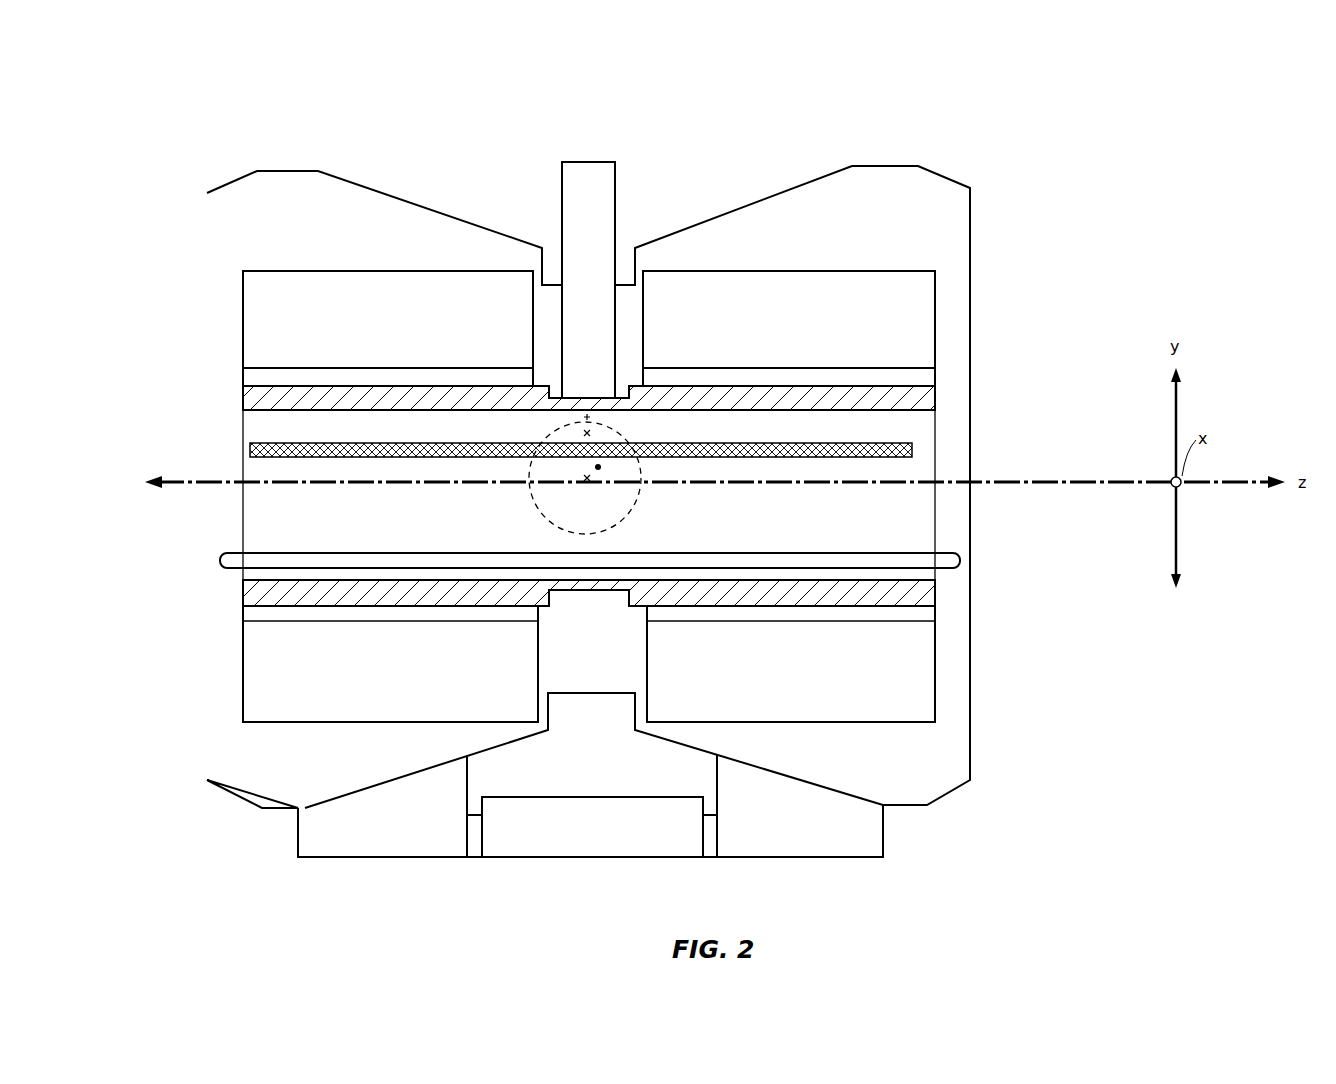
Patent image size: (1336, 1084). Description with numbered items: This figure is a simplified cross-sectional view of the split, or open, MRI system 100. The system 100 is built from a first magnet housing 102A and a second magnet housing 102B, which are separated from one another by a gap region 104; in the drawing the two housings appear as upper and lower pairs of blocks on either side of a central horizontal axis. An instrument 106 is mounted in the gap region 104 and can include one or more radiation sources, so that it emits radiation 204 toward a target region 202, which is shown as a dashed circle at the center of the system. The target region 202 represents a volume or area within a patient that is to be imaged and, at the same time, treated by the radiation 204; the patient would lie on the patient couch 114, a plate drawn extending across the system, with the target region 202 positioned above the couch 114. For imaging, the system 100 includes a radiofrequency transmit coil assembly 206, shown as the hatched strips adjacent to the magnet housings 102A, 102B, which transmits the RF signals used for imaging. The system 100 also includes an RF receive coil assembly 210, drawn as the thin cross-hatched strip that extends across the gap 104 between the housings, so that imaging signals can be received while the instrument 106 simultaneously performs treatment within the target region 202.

The split MRI system 100 is at (208, 122).
The first magnet housing 102A is at (390, 496).
The second magnet housing 102B is at (789, 496).
The gap region 104 is at (580, 732).
The instrument 106 is at (618, 193).
The patient couch 114 is at (386, 551).
The target region 202 is at (538, 505).
The radiation 204 is at (602, 469).
The radiofrequency transmit coil assembly 206 is at (852, 385).
The RF receive coil assembly 210 is at (915, 448).